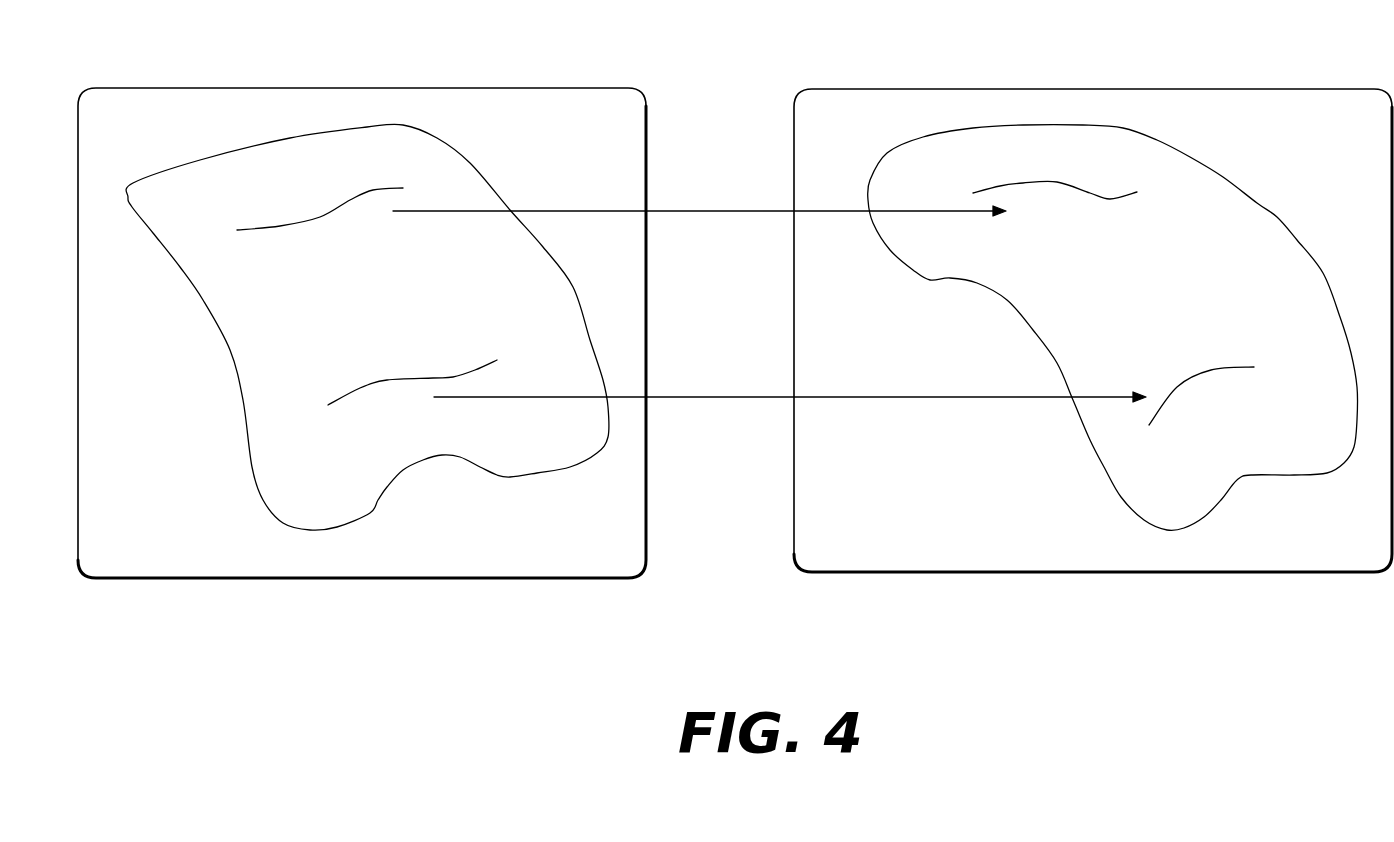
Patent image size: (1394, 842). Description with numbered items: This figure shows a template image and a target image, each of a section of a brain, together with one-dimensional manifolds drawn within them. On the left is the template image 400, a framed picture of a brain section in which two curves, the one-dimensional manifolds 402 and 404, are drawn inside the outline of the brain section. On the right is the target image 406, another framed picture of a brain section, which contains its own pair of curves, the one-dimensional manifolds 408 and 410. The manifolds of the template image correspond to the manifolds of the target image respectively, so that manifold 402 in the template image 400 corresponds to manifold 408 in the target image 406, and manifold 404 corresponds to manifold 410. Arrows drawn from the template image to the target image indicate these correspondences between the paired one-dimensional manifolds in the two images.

The template image 400 is at (172, 118).
The 1-dimensional manifold 402 is at (270, 220).
The 1-dimensional manifold 404 is at (460, 368).
The target image 406 is at (878, 120).
The 1-dimensional manifold 408 is at (1083, 173).
The 1-dimensional manifold 410 is at (1191, 370).